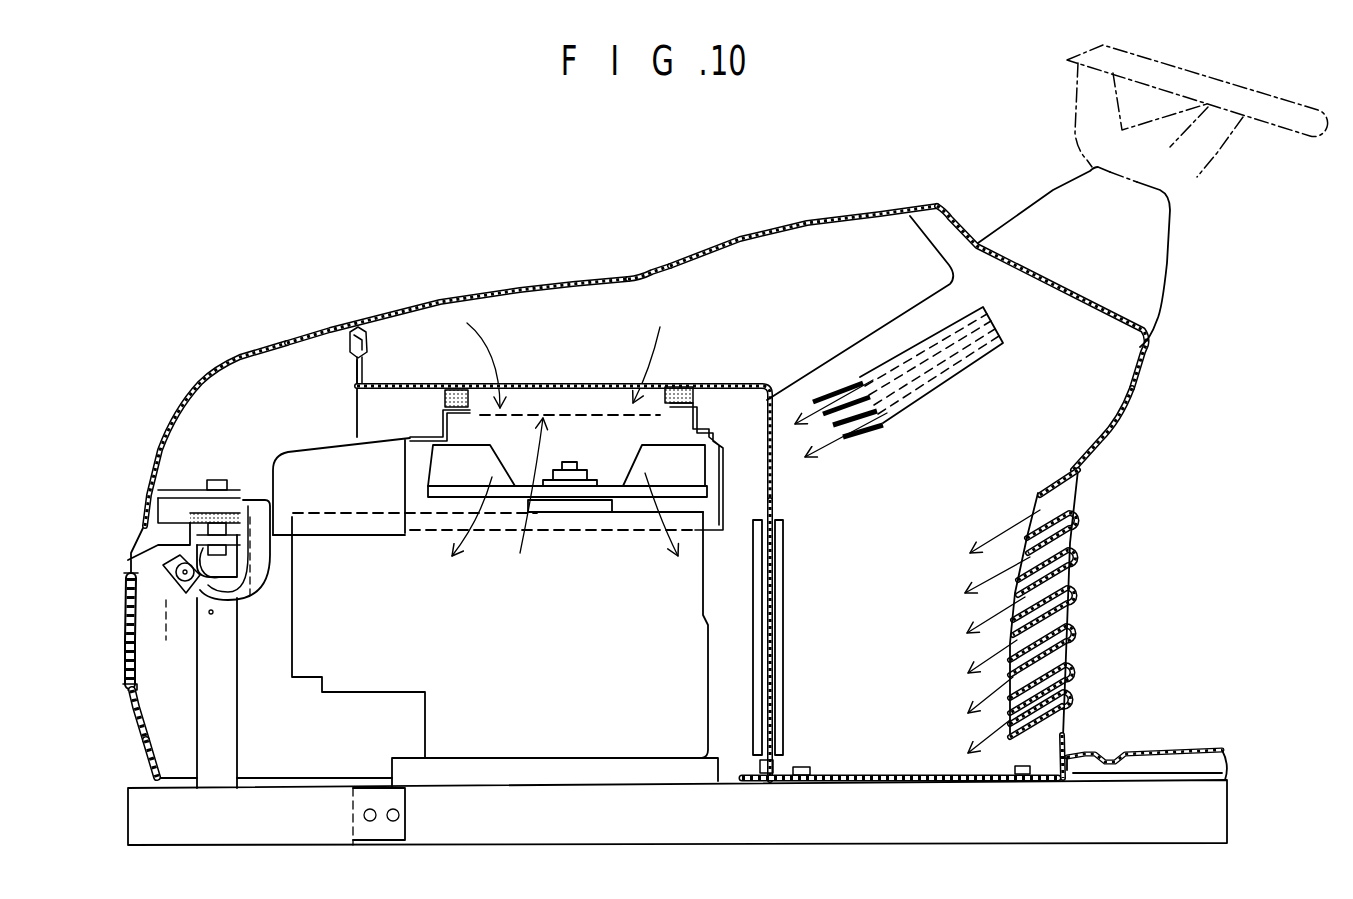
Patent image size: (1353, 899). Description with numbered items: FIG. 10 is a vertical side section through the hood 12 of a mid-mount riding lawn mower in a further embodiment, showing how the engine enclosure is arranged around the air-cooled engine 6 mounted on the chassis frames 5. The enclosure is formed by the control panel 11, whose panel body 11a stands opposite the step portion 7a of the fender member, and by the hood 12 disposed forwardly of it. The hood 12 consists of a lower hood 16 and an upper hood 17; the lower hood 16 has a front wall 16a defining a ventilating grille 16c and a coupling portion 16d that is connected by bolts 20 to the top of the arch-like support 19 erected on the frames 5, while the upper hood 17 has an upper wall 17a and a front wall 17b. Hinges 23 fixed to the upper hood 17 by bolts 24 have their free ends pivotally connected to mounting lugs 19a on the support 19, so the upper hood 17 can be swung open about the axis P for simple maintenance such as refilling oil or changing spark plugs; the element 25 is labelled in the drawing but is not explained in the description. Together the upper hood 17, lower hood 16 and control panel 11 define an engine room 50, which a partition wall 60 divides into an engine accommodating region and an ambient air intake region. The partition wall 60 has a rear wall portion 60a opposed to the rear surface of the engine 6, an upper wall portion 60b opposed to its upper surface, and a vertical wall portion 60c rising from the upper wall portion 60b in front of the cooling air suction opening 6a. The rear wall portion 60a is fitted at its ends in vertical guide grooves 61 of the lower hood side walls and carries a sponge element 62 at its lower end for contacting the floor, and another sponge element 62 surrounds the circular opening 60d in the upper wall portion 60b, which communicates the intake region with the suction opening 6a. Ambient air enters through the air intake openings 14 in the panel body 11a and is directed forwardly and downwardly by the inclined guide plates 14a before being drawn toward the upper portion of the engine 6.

The chassis frames 5 is at (1205, 815).
The engine 6 is at (585, 736).
The cooling air suction opening 6a is at (490, 457).
The step portion 7a is at (1180, 752).
The control panel 11 is at (1150, 350).
The panel body 11a is at (1093, 437).
The hood 12 is at (636, 265).
The air intake openings 14 is at (875, 425).
The inclined guide plates 14a is at (1052, 480).
The lower hood 16 is at (126, 552).
The front wall 16a is at (143, 752).
The ventilating grille 16c is at (125, 672).
The coupling portion 16d is at (183, 522).
The upper hood 17 is at (748, 244).
The upper wall 17a is at (518, 287).
The front wall 17b is at (185, 398).
The arch-like support 19 is at (228, 740).
The mounting lugs 19a is at (171, 617).
The bolts 20 is at (237, 537).
The hinges 23 is at (262, 574).
The bolts 24 is at (225, 482).
The mounting member 25 is at (243, 500).
The engine room 50 is at (314, 365).
The partition wall 60 is at (762, 375).
The rear wall portion 60a is at (775, 490).
The upper wall portion 60b is at (722, 380).
The vertical wall portion 60c is at (363, 368).
The circular opening 60d is at (568, 382).
The vertical guide grooves 61 is at (785, 603).
The sponge element 62 is at (443, 398).
The axis P is at (211, 612).